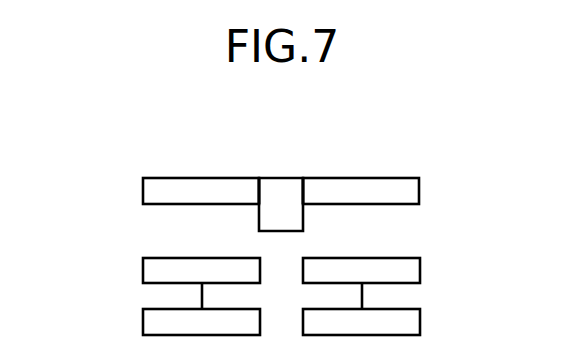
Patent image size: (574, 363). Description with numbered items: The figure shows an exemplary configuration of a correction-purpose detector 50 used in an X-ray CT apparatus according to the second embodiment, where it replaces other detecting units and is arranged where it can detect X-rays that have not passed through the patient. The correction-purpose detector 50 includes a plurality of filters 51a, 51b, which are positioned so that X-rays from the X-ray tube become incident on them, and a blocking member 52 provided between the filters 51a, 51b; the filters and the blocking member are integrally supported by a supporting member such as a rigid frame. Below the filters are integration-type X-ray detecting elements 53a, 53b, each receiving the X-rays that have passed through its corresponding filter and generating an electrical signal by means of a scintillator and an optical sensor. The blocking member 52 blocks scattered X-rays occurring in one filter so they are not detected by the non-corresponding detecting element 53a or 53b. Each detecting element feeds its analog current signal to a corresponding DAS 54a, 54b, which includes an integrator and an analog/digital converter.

The correction-purpose detector 50 is at (474, 145).
The filter 51a is at (198, 178).
The filter 51b is at (359, 178).
The blocking member 52 is at (278, 177).
The integration-type X-ray detecting element 53a is at (143, 264).
The integration-type X-ray detecting element 53b is at (420, 264).
The DAS 54a is at (143, 315).
The DAS 54b is at (420, 315).